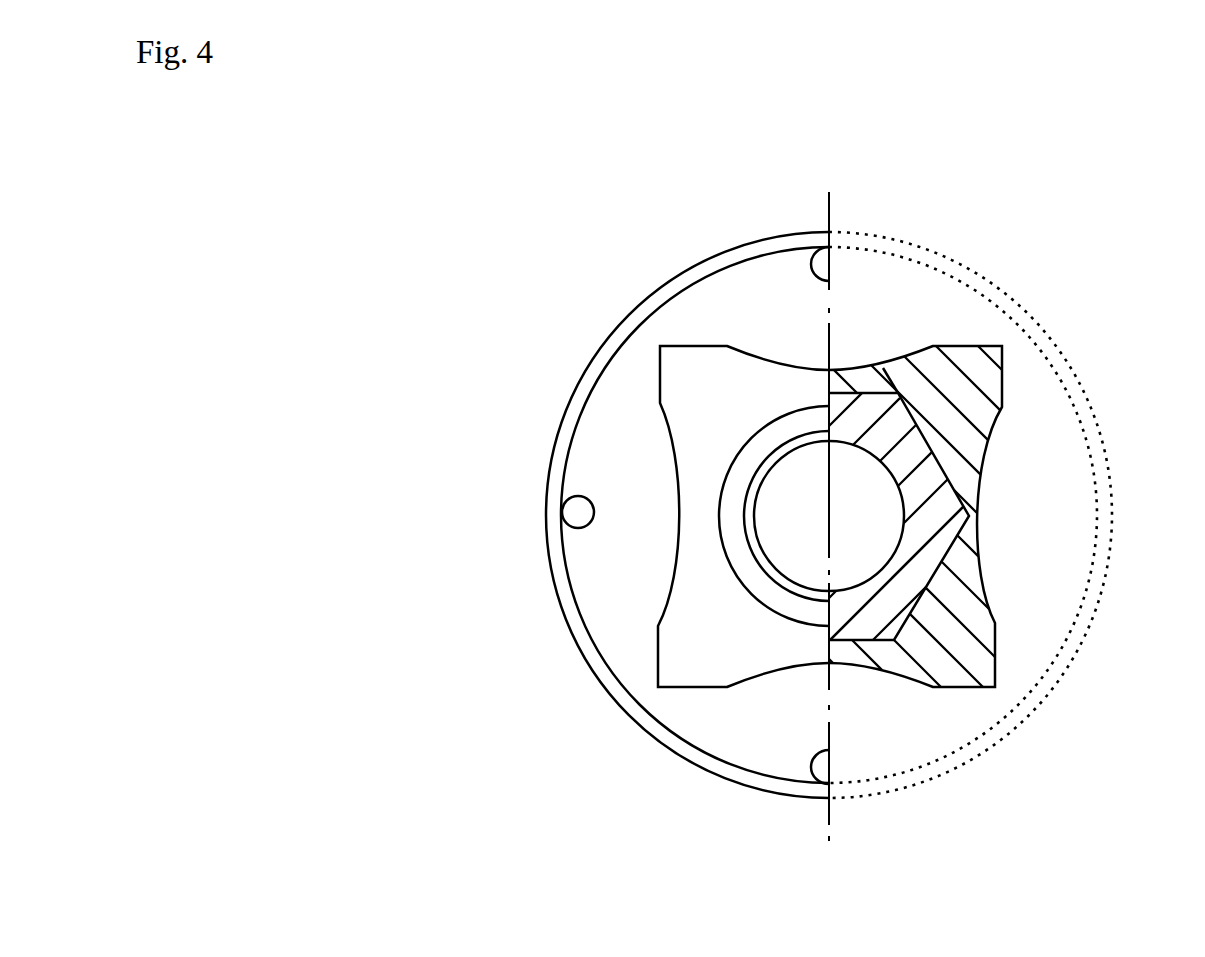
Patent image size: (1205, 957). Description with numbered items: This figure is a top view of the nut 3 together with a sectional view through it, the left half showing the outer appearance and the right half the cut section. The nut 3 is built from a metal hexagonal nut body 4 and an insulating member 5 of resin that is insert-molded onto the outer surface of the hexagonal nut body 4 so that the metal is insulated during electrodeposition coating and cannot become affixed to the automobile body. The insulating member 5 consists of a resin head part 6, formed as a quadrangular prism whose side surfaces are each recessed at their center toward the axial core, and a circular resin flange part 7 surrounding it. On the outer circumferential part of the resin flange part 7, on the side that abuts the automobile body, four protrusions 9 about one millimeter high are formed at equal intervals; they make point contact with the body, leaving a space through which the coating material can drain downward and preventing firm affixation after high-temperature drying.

The nut 3 is at (595, 285).
The hexagonal nut body 4 is at (878, 408).
The insulating member 5 is at (988, 372).
The resin head part 6 is at (677, 650).
The resin flange part 7 is at (747, 746).
The protrusion 9 is at (575, 508).